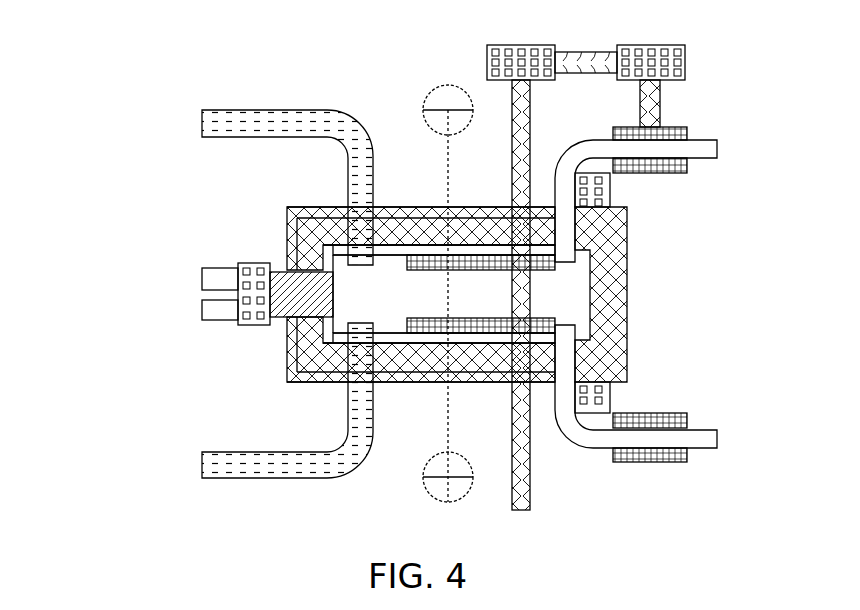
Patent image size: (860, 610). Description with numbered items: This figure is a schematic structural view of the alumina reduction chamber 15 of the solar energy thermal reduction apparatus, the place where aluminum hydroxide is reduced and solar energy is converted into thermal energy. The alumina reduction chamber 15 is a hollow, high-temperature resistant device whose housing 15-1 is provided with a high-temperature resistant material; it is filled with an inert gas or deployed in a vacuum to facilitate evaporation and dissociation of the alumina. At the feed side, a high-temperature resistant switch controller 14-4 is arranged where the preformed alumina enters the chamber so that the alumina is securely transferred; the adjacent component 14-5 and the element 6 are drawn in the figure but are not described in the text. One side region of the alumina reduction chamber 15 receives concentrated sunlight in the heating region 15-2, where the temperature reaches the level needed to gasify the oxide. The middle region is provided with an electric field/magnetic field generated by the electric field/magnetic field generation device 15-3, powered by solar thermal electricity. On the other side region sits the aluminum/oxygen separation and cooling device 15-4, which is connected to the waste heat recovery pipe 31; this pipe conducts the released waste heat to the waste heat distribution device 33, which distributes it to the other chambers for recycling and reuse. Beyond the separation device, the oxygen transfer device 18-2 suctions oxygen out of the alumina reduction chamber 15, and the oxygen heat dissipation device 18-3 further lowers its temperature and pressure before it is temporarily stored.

The waste heat distribution device 33 is at (487, 63).
The waste heat recovery pipe 31 is at (512, 103).
The aluminum/oxygen separation and cooling device 15-4 is at (350, 212).
The electric field/magnetic field generation device 15-3 is at (300, 219).
The liner sleeve 6 is at (368, 252).
The heating region 15-2 is at (368, 287).
The shaft end block 14-5 is at (290, 287).
The high-temperature resistant switch controller 14-4 is at (247, 311).
The alumina reduction chamber 15 is at (283, 348).
The housing 15-1 is at (317, 356).
The oxygen transfer device 18-2 is at (596, 395).
The oxygen heat dissipation device 18-3 is at (653, 418).